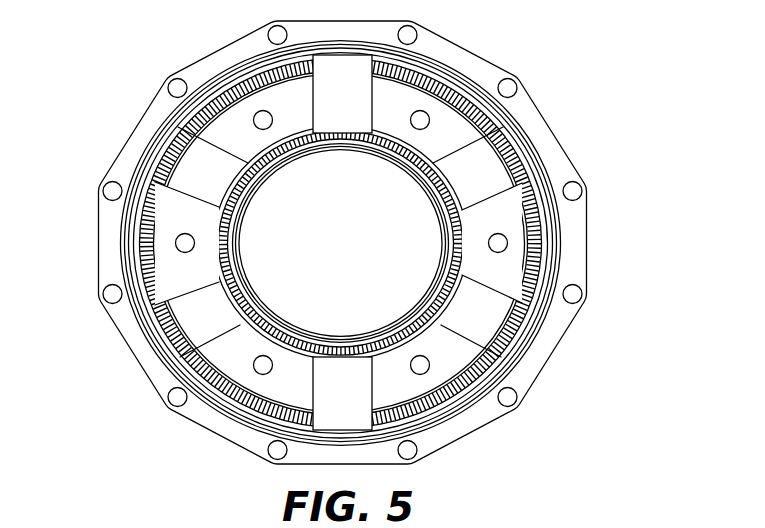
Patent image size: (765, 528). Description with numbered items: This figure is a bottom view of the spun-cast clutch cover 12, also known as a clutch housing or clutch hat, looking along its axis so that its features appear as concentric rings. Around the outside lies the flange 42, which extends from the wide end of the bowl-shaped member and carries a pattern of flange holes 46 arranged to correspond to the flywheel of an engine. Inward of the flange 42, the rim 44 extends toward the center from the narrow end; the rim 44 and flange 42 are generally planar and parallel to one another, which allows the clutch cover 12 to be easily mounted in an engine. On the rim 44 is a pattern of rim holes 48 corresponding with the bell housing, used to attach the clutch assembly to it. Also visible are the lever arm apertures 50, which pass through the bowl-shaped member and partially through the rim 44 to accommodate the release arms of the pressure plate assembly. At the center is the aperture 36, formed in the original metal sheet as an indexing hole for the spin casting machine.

The clutch cover 12 is at (460, 28).
The aperture 36 is at (240, 243).
The flange 42 is at (577, 242).
The rim 44 is at (443, 252).
The flange holes 46 is at (271, 27).
The rim holes 48 is at (413, 116).
The lever arm apertures 50 is at (226, 189).